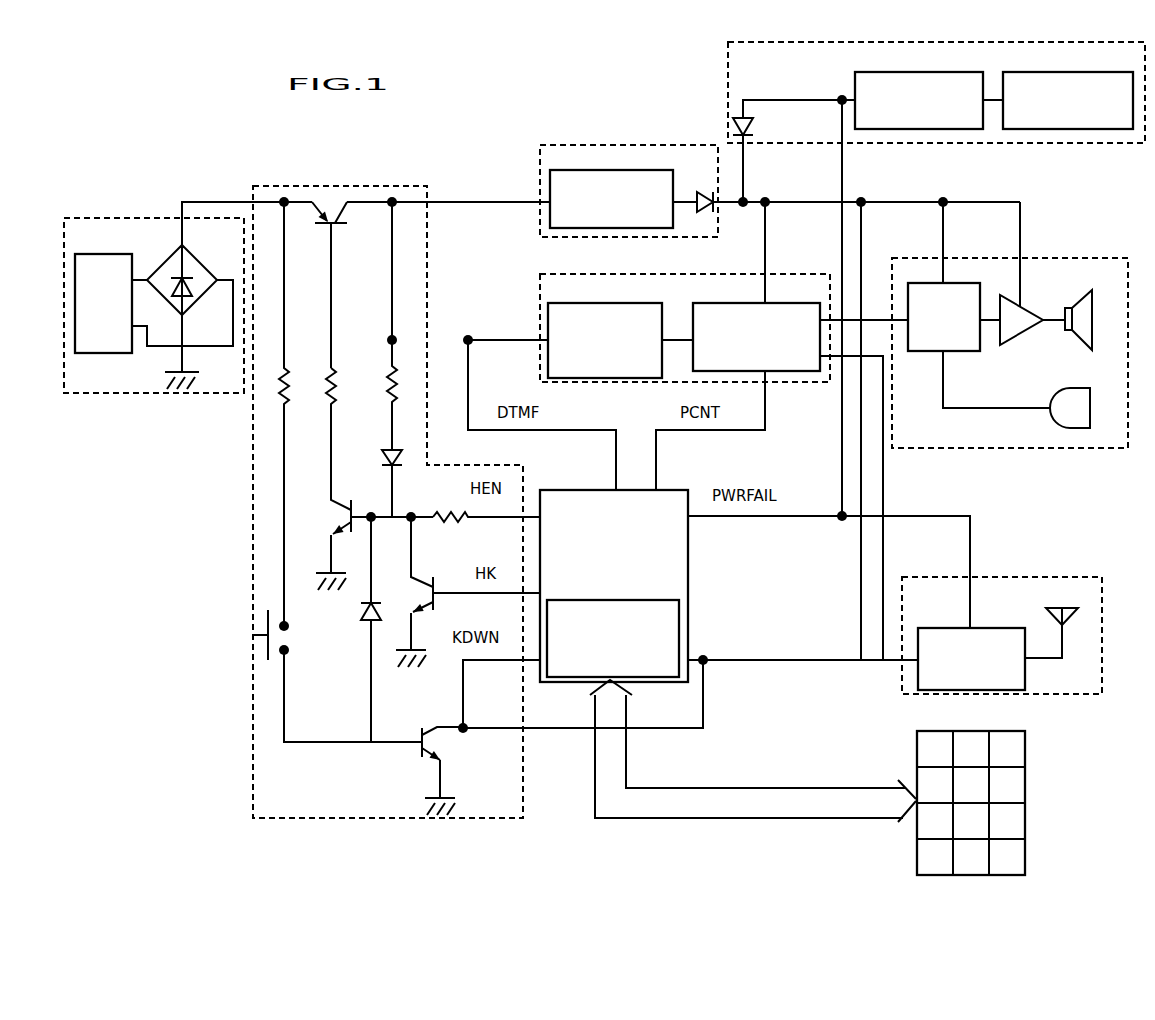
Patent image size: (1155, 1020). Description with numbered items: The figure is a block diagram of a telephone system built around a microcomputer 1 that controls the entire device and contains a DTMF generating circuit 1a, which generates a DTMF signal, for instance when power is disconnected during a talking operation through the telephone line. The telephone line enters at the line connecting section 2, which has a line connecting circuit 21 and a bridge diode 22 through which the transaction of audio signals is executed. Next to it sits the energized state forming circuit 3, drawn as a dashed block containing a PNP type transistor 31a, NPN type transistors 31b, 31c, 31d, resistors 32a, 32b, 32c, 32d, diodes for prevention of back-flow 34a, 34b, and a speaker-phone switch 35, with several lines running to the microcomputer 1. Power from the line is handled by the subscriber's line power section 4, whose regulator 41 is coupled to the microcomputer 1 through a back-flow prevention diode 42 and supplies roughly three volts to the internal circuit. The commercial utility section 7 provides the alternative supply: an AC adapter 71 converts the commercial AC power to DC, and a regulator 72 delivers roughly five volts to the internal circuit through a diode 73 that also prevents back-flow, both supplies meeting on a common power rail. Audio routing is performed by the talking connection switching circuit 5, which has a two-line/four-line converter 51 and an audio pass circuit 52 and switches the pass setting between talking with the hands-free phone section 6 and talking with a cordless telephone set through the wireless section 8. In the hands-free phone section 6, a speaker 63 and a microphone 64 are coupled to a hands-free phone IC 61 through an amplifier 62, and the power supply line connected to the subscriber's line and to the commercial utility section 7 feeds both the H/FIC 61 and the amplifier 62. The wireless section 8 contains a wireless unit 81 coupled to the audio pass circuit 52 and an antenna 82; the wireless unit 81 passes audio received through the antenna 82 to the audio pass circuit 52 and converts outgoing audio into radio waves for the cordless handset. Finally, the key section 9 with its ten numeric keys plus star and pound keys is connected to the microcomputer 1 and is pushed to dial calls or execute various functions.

The microcomputer 1 is at (755, 656).
The DTMF generating circuit 1a is at (677, 634).
The line connecting section 2 is at (174, 284).
The line connecting circuit 21 is at (103, 254).
The bridge diode 22 is at (193, 254).
The energized state forming circuit 3 is at (478, 502).
The PNP type transistor 31a is at (338, 228).
The NPN type transistor 31b is at (354, 500).
The NPN type transistor 31c is at (442, 643).
The NPN type transistor 31d is at (413, 736).
The resistor 32a is at (293, 392).
The resistor 32b is at (340, 392).
The resistor 32c is at (375, 384).
The resistor 32d is at (439, 523).
The diode for prevention of back-flow 34a is at (397, 468).
The diode for prevention of back-flow 34b is at (365, 613).
The speaker-phone switch 35 is at (290, 633).
The subscriber's line power section 4 is at (759, 191).
The regulator 41 is at (611, 159).
The diode for prevention of back-flow 42 is at (703, 190).
The talking connection switching circuit 5 is at (688, 447).
The two-line/four-line converter 51 is at (618, 303).
The audio pass circuit 52 is at (789, 303).
The hands-free phone section 6 is at (1010, 330).
The hands-free phone IC 61 is at (967, 351).
The amplifier 62 is at (1021, 313).
The speaker 63 is at (1091, 292).
The microphone 64 is at (1081, 392).
The commercial utility section 7 is at (917, 122).
The AC adapter 71 is at (1045, 72).
The regulator 72 is at (872, 72).
The diode for prevention of back-flow 73 is at (752, 124).
The wireless section 8 is at (1002, 614).
The wireless unit 81 is at (990, 617).
The antenna 82 is at (1057, 614).
The key section 9 is at (980, 731).